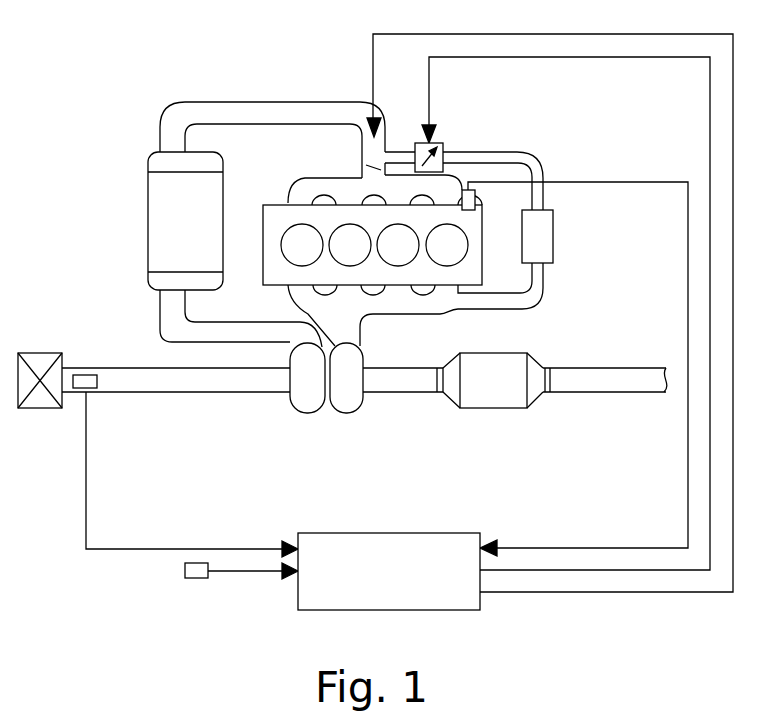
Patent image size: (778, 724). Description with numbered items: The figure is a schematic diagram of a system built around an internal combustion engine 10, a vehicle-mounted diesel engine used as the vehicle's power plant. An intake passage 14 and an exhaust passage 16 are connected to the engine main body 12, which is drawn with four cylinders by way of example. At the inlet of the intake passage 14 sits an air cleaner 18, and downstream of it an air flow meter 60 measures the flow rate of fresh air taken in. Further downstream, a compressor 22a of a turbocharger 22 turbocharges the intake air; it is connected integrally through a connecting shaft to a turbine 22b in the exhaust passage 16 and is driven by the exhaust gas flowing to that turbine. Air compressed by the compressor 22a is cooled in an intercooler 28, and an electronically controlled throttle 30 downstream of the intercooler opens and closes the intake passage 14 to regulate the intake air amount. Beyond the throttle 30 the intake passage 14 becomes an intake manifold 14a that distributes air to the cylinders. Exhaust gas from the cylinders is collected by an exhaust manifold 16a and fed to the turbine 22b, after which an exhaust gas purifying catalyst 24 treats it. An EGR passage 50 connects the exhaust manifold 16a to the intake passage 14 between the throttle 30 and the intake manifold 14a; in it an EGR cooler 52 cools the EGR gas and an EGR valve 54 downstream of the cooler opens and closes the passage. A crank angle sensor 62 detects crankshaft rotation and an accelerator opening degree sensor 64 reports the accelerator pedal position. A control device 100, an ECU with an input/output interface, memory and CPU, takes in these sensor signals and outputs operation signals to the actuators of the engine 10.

The internal combustion engine 10 is at (522, 134).
The engine main body 12 is at (263, 205).
The intake passage 14 is at (148, 405).
The intake manifold 14a is at (302, 180).
The exhaust passage 16 is at (432, 416).
The exhaust manifold 16a is at (297, 295).
The air cleaner 18 is at (46, 356).
The turbocharger 22 is at (342, 417).
The compressor 22a is at (308, 409).
The turbine 22b is at (352, 409).
The exhaust gas purifying catalyst 24 is at (502, 396).
The intercooler 28 is at (165, 213).
The throttle 30 is at (363, 148).
The EGR passage 50 is at (537, 290).
The EGR cooler 52 is at (440, 143).
The EGR valve 54 is at (555, 232).
The air flow meter 60 is at (88, 373).
The crank angle sensor 62 is at (486, 164).
The accelerator opening degree sensor 64 is at (183, 568).
The control device 100 is at (430, 523).